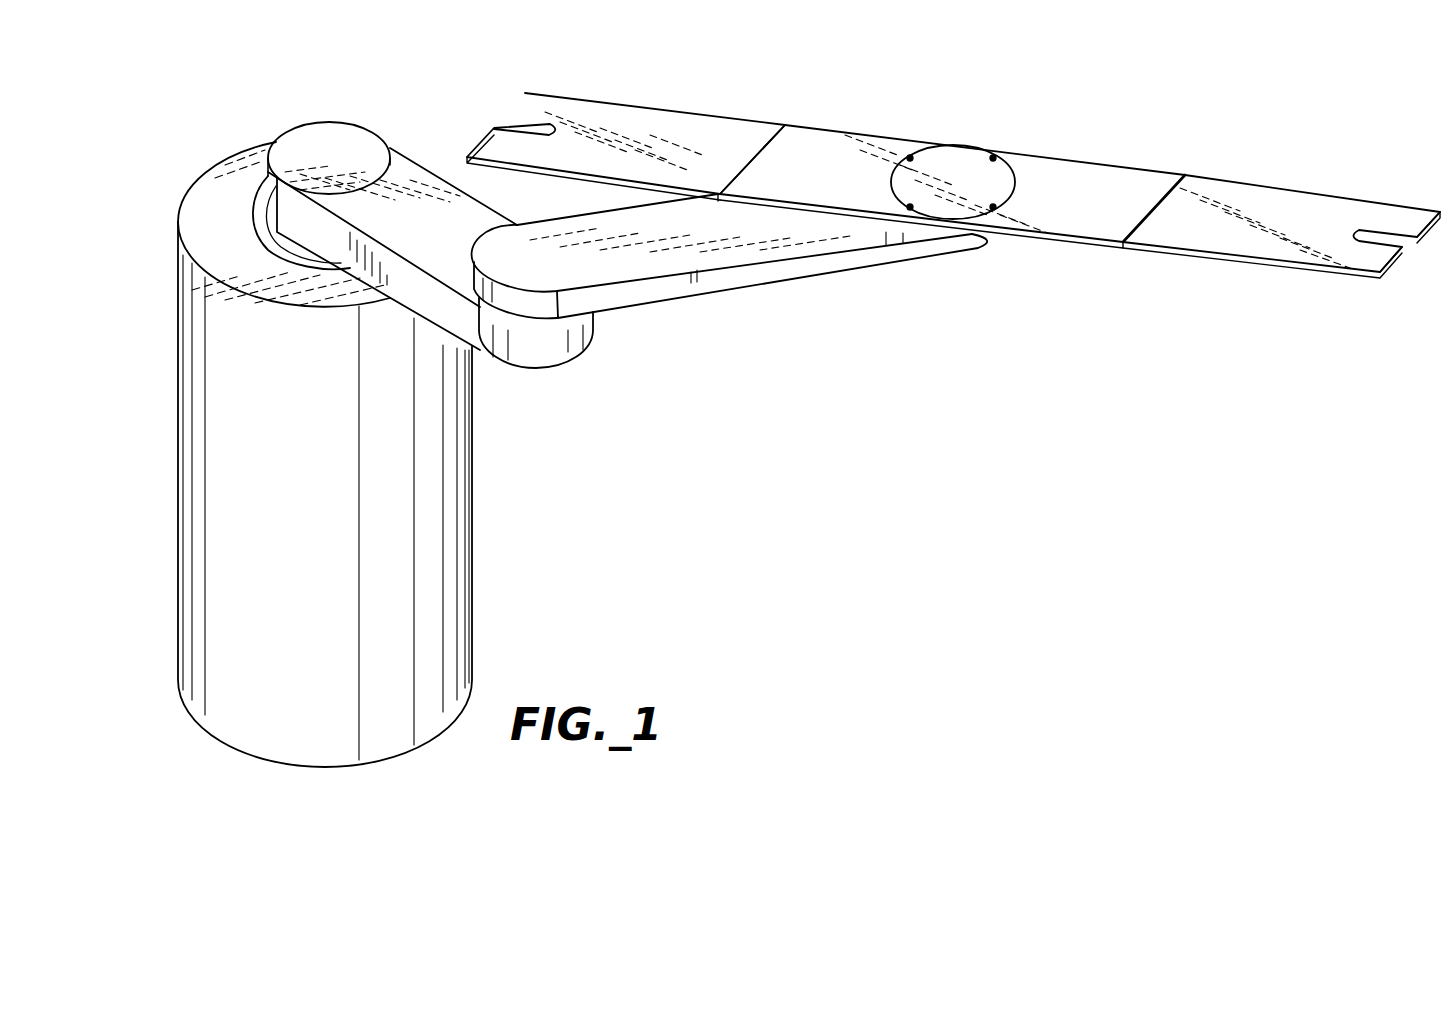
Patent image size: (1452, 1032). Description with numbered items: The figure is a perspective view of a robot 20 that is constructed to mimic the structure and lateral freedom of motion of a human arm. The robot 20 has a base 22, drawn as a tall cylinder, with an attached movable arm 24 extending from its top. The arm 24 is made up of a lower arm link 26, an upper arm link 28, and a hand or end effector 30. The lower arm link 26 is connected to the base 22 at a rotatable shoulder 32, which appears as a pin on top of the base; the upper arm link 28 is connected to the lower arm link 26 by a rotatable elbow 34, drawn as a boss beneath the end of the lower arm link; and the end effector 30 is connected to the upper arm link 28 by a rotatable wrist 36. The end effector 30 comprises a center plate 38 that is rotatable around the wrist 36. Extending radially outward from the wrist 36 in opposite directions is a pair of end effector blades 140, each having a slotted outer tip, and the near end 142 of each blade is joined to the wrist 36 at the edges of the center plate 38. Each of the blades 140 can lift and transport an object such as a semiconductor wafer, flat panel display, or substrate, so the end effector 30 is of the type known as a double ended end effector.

The robot 20 is at (768, 658).
The base 22 is at (433, 467).
The movable arm 24 is at (955, 168).
The lower arm link 26 is at (393, 157).
The upper arm link 28 is at (722, 277).
The end effector 30 is at (1375, 210).
The rotatable shoulder 32 is at (332, 140).
The rotatable elbow 34 is at (543, 347).
The rotatable wrist 36 is at (957, 170).
The center plate 38 is at (1065, 176).
The end effector blades 140 is at (668, 125).
The near end 142 is at (777, 123).